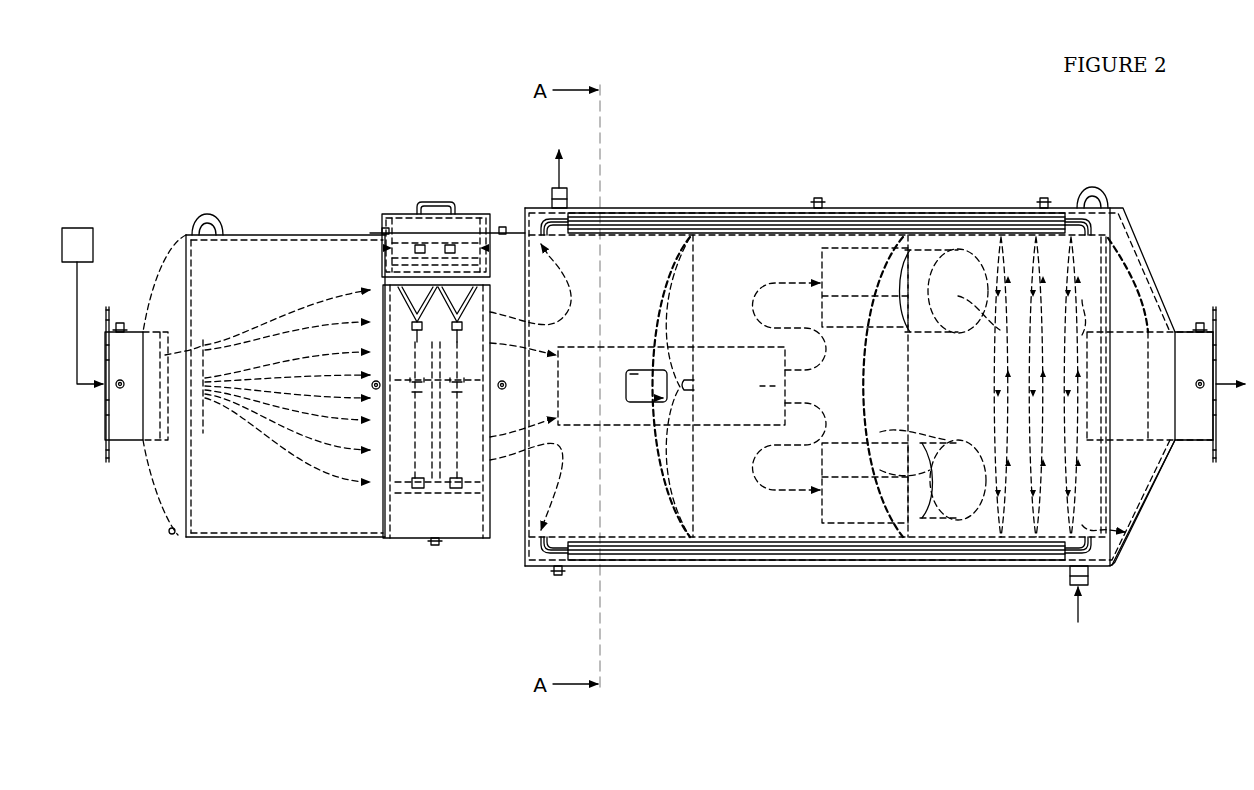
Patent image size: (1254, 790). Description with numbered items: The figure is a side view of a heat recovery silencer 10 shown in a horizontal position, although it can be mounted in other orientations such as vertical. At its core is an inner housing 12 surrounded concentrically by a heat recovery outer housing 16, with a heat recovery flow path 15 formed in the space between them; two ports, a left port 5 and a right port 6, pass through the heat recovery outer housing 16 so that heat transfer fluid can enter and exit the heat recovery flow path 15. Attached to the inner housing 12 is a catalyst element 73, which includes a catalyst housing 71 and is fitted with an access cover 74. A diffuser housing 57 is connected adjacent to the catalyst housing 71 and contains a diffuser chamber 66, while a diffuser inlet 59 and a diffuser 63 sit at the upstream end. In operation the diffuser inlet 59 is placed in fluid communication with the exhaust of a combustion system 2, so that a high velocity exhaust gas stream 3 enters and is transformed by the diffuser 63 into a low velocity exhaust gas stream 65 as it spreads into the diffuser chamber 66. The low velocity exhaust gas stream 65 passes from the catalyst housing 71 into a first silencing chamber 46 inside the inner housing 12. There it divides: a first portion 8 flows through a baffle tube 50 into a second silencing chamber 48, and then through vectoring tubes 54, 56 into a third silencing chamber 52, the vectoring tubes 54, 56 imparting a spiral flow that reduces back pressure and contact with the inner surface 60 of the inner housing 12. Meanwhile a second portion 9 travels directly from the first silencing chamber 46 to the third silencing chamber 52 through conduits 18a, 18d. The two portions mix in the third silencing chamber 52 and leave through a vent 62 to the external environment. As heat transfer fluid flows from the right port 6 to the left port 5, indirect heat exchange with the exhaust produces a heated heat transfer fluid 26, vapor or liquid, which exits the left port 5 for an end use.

The combustion system 2 is at (77, 245).
The high velocity exhaust gas stream 3 is at (77, 387).
The left port 5 is at (552, 198).
The right port 6 is at (1089, 578).
The first portion of the low velocity exhaust gas stream 8 is at (505, 341).
The second portion of the low velocity exhaust gas stream 9 is at (567, 472).
The heat recovery silencer 10 is at (1073, 687).
The inner housing 12 is at (813, 542).
The heat recovery flow path 15 is at (521, 558).
The heat recovery outer housing 16 is at (900, 566).
The conduit 18a is at (765, 212).
The conduit 18d is at (768, 561).
The heated heat transfer fluid 26 is at (559, 177).
The first silencing chamber 46 is at (658, 253).
The second silencing chamber 48 is at (720, 253).
The baffle tube 50 is at (620, 347).
The third silencing chamber 52 is at (1087, 252).
The vectoring tube 54 is at (945, 520).
The vectoring tube 56 is at (948, 250).
The diffuser housing 57 is at (291, 538).
The diffuser inlet 59 is at (136, 332).
The inner surface 60 is at (708, 537).
The vent 62 is at (1180, 332).
The diffuser 63 is at (203, 433).
The low velocity exhaust gas stream 65 is at (264, 322).
The diffuser chamber 66 is at (314, 252).
The catalyst housing 71 is at (410, 540).
The catalyst element 73 is at (481, 212).
The access cover 74 is at (400, 214).